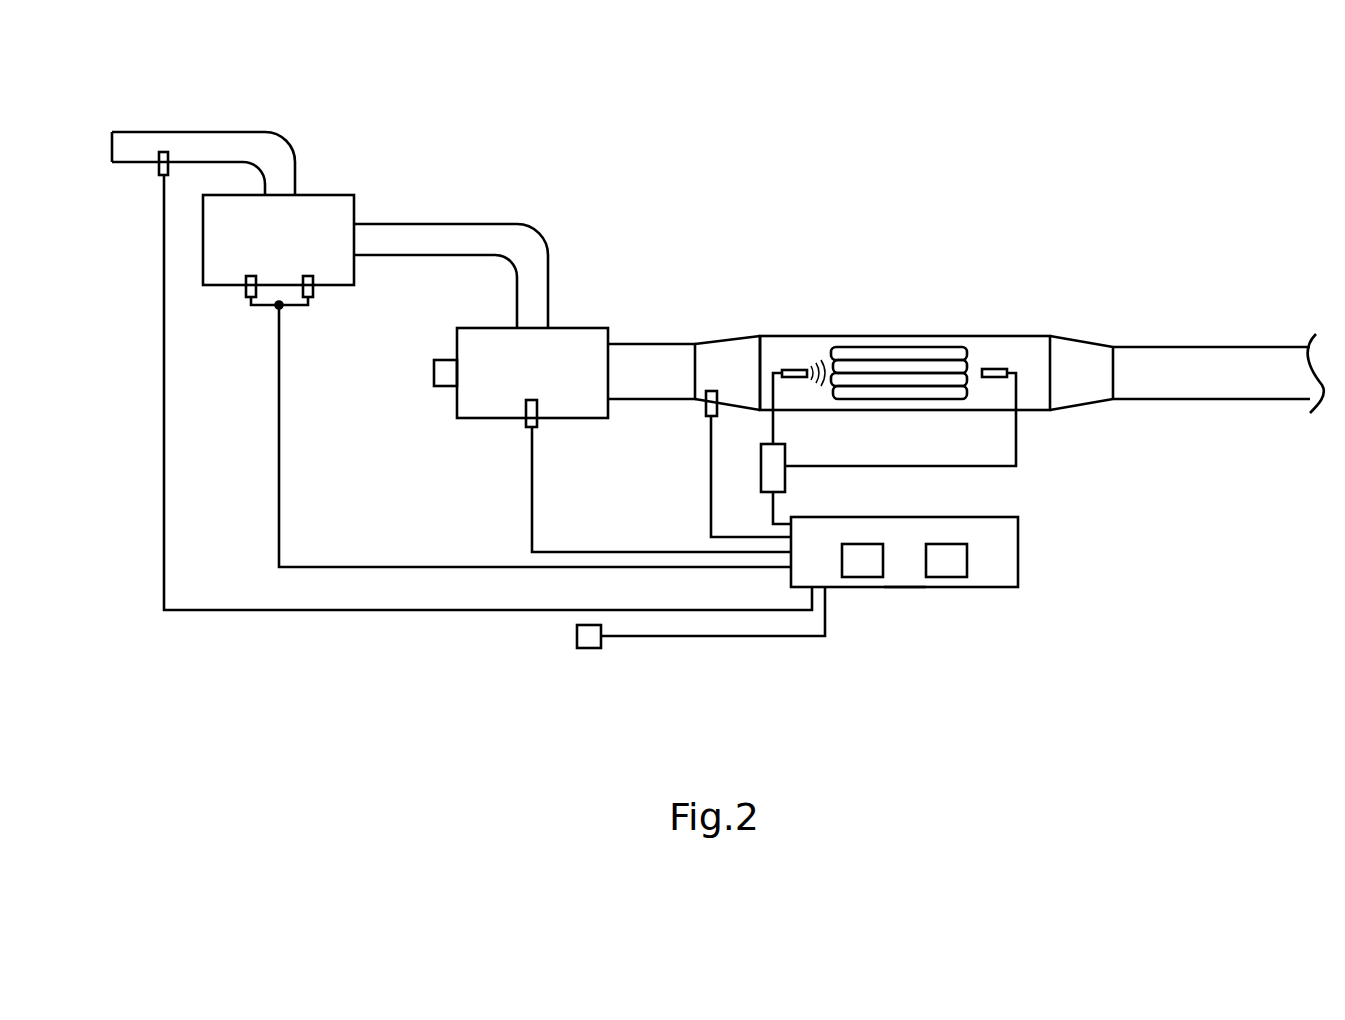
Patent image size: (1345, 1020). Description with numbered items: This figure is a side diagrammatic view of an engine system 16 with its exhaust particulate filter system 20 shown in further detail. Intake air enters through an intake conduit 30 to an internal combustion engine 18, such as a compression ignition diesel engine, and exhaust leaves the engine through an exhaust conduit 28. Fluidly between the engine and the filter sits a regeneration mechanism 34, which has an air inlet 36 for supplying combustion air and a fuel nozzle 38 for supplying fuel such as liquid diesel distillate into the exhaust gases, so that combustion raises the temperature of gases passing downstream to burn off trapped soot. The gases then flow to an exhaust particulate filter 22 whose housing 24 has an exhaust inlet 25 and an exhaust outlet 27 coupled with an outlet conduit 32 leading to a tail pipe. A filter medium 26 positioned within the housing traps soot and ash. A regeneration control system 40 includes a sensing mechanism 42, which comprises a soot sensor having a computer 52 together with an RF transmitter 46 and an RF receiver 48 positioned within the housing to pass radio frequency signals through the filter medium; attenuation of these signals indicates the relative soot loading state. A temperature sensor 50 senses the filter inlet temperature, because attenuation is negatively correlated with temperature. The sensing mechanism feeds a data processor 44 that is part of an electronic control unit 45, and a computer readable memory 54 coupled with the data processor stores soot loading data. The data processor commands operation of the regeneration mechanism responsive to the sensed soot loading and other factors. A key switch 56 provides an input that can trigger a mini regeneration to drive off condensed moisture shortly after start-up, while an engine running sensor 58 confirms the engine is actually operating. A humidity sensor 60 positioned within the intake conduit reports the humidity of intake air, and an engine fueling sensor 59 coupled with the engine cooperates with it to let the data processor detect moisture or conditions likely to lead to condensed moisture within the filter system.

The engine system 16 is at (752, 265).
The internal combustion engine 18 is at (333, 195).
The exhaust particulate filter system 20 is at (940, 312).
The exhaust particulate filter 22 is at (980, 323).
The housing 24 is at (800, 336).
The exhaust inlet 25 is at (695, 344).
The filter medium 26 is at (892, 410).
The exhaust outlet 27 is at (1113, 347).
The exhaust conduit 28 is at (497, 224).
The intake conduit 30 is at (249, 132).
The outlet conduit 32 is at (1256, 347).
The regeneration mechanism 34 is at (497, 328).
The air inlet 36 is at (434, 375).
The fuel nozzle 38 is at (526, 415).
The regeneration control system 40 is at (935, 578).
The sensing mechanism 42 is at (761, 506).
The data processor 44 is at (852, 578).
The electronic control unit 45 is at (905, 588).
The RF transmitter 46 is at (789, 378).
The RF receiver 48 is at (985, 378).
The temperature sensor 50 is at (706, 405).
The computer 52 is at (786, 476).
The computer readable memory 54 is at (958, 578).
The key switch 56 is at (577, 637).
The engine running sensor 58 is at (246, 290).
The engine fueling sensor 59 is at (313, 290).
The humidity sensor 60 is at (159, 168).